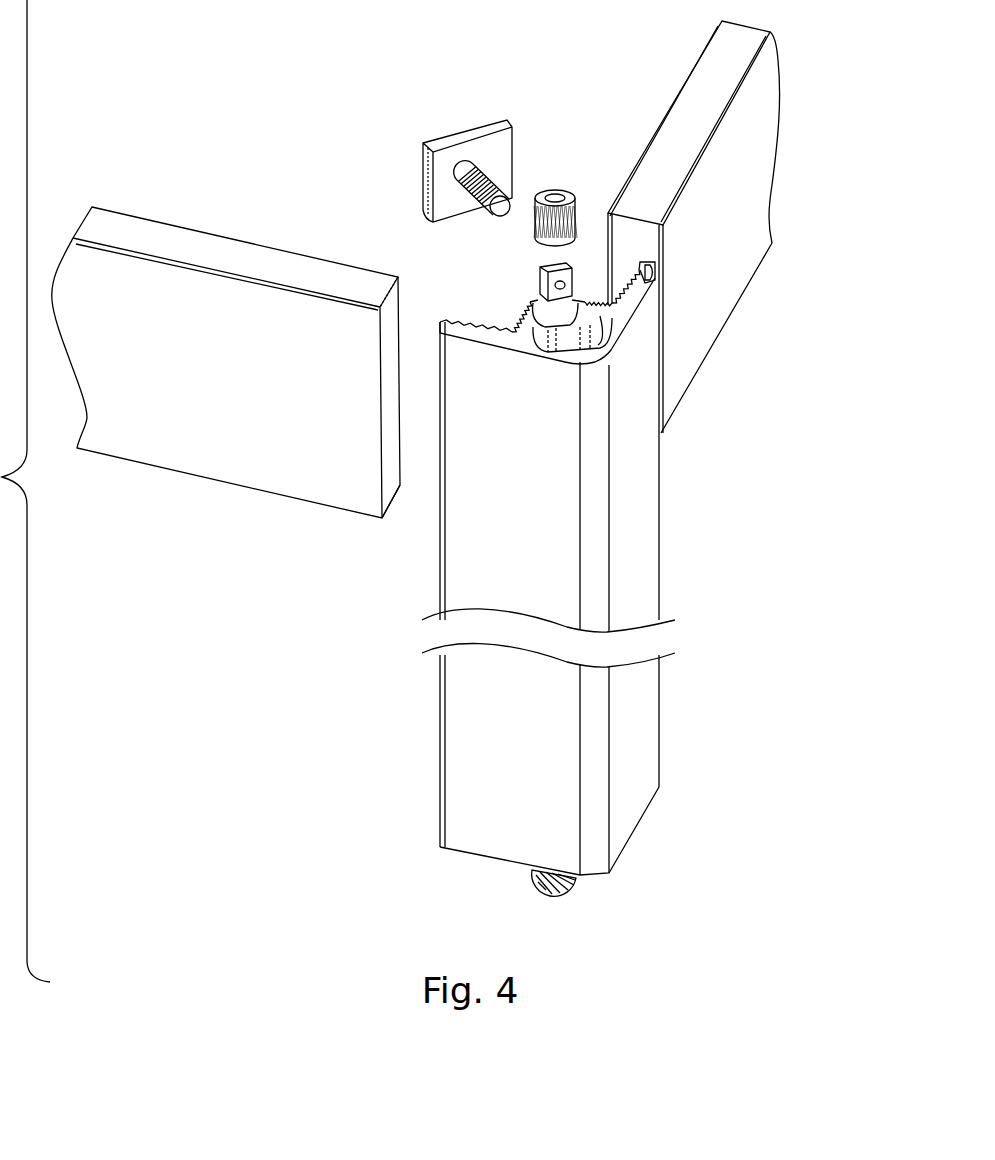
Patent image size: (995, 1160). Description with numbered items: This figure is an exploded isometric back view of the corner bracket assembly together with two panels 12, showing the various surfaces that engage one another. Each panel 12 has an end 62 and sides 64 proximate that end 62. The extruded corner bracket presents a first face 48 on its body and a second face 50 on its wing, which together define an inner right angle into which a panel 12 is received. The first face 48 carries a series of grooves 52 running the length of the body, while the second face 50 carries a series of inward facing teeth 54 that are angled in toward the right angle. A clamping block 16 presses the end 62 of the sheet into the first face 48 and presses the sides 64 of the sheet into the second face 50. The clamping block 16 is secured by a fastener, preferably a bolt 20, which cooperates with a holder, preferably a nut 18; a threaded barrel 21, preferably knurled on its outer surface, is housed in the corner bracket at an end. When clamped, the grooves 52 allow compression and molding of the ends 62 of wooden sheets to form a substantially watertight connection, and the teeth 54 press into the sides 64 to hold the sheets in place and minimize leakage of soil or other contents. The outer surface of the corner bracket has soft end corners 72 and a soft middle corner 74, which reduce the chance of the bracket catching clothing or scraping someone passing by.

The panel 12 is at (142, 437).
The side 64 is at (207, 403).
The end 62 is at (407, 490).
The clamping block 16 is at (477, 147).
The bolt 20 is at (467, 183).
The threaded barrel 21 is at (557, 190).
The grooves 52 is at (596, 297).
The nut 18 is at (556, 270).
The inward facing teeth 54 is at (483, 330).
The second face 50 is at (498, 340).
The first face 48 is at (592, 305).
The soft end corners 72 is at (653, 267).
The soft middle corner 74 is at (590, 863).